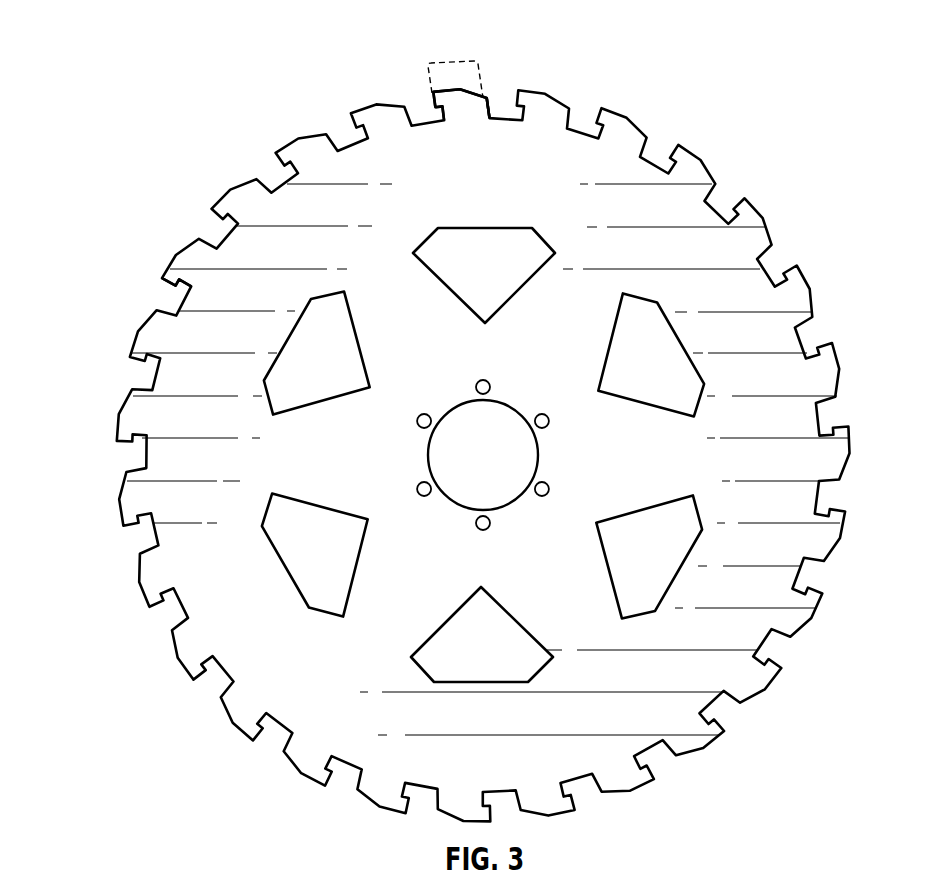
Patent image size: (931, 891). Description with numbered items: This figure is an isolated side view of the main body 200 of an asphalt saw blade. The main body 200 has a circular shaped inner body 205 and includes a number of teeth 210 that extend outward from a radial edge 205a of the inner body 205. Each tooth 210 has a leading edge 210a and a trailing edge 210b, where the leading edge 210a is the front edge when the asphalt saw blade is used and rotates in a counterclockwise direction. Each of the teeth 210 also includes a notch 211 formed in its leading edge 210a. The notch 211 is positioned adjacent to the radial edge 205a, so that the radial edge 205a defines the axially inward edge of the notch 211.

The main body 200 is at (438, 411).
The inner body 205 is at (187, 388).
The radial edge 205a is at (177, 307).
The tooth 210 is at (455, 63).
The leading edge 210a is at (432, 97).
The trailing edge 210b is at (483, 99).
The notch 211 is at (442, 115).